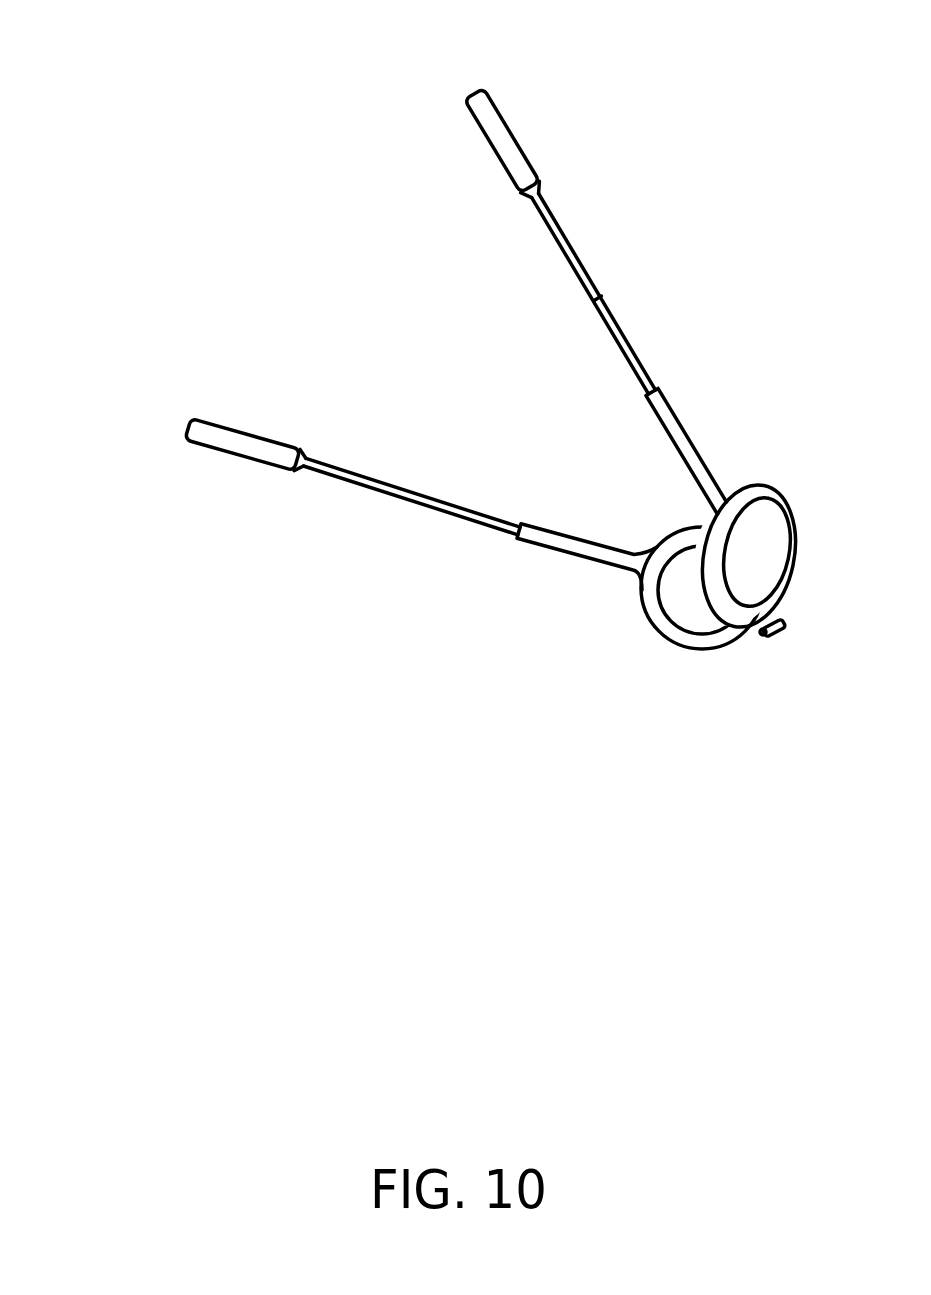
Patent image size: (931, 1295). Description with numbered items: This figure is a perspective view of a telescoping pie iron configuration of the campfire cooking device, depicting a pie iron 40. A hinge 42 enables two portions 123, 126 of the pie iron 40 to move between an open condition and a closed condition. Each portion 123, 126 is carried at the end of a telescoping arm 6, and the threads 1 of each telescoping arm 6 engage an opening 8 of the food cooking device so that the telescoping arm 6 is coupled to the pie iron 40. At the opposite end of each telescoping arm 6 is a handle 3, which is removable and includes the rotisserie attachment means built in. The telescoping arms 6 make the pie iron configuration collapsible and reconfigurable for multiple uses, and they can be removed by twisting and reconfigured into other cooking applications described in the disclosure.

The portion of the pie iron 126 is at (469, 70).
The portion of the pie iron 123 is at (402, 531).
The handle 3 is at (492, 134).
The telescoping arm 6 is at (558, 240).
The threads 1 is at (597, 481).
The opening 8 is at (653, 389).
The pie iron 40 is at (700, 643).
The hinge 42 is at (764, 637).